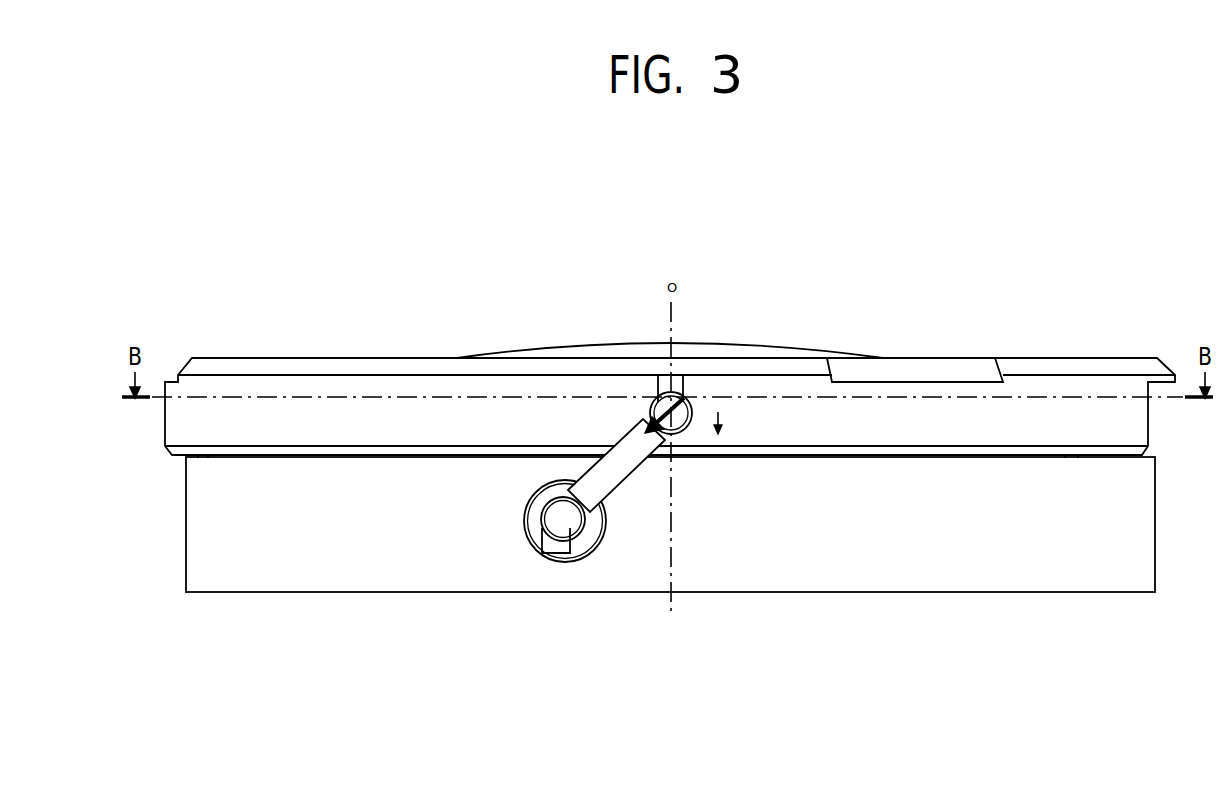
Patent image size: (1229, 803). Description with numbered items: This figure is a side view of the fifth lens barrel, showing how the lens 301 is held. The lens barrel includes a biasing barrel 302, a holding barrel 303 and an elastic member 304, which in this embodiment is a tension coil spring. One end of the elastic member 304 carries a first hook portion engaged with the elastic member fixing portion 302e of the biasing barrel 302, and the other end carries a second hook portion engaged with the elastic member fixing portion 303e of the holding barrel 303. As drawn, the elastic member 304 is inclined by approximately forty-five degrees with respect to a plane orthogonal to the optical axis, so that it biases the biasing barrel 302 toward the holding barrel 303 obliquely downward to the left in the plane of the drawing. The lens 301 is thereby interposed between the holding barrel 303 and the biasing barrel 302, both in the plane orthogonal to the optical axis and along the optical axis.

The lens 301 is at (610, 355).
The biasing barrel 302 is at (393, 387).
The elastic member fixing portion 302e is at (683, 423).
The holding barrel 303 is at (387, 575).
The elastic member fixing portion 303e is at (560, 524).
The elastic member 304 is at (613, 477).